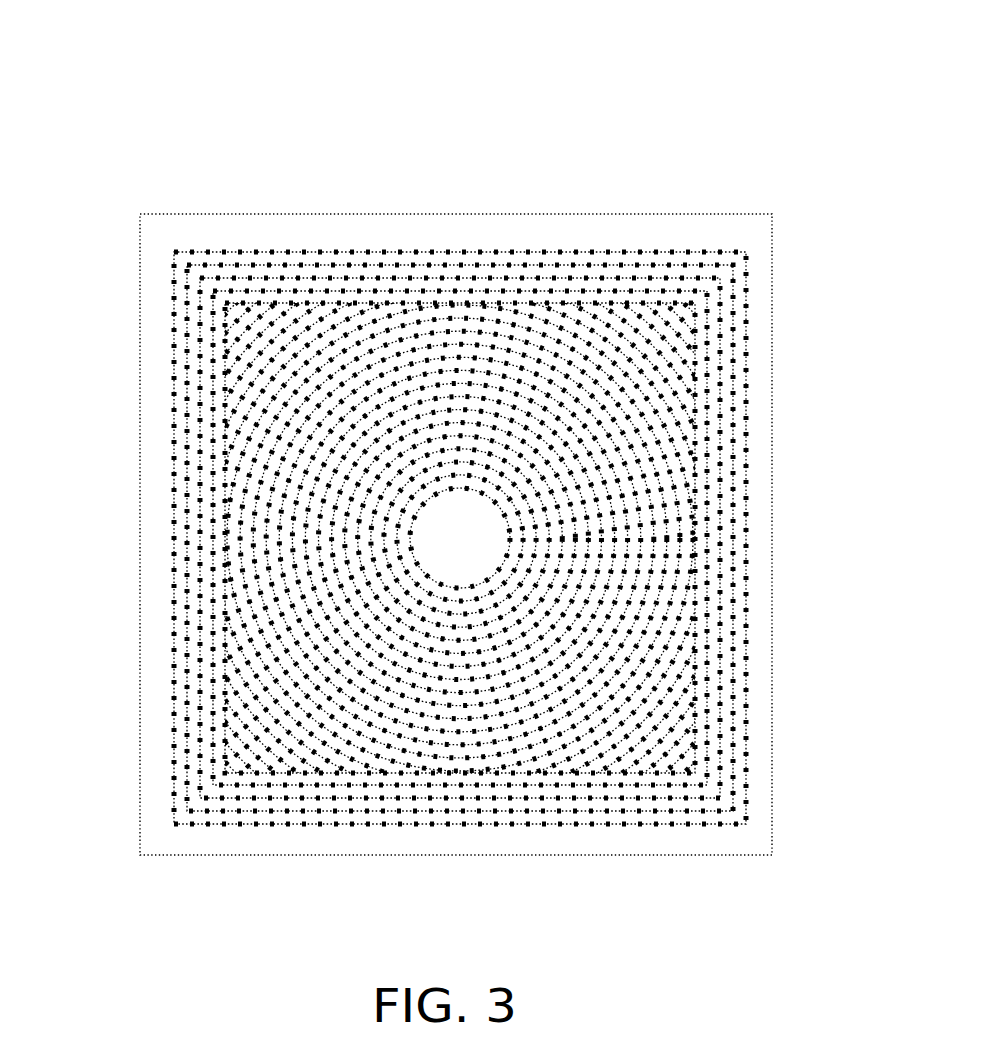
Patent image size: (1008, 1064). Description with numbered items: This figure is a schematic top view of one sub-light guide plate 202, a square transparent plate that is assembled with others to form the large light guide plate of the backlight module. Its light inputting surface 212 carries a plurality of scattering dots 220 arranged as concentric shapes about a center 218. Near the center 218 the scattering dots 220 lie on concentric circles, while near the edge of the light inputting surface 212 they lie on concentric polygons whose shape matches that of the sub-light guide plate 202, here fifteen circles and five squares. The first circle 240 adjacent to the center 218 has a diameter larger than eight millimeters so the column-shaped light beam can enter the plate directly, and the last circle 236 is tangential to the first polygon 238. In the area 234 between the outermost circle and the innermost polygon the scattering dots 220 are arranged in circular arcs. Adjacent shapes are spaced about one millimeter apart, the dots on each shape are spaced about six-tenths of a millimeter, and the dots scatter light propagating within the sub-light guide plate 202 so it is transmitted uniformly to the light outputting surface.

The sub-light guide plate 202 is at (374, 60).
The light inputting surface 212 is at (157, 465).
The center 218 is at (447, 537).
The scattering dots 220 is at (735, 615).
The area 234 is at (248, 328).
The last circle 236 is at (570, 330).
The first polygon 238 is at (660, 303).
The first circle 240 is at (507, 523).